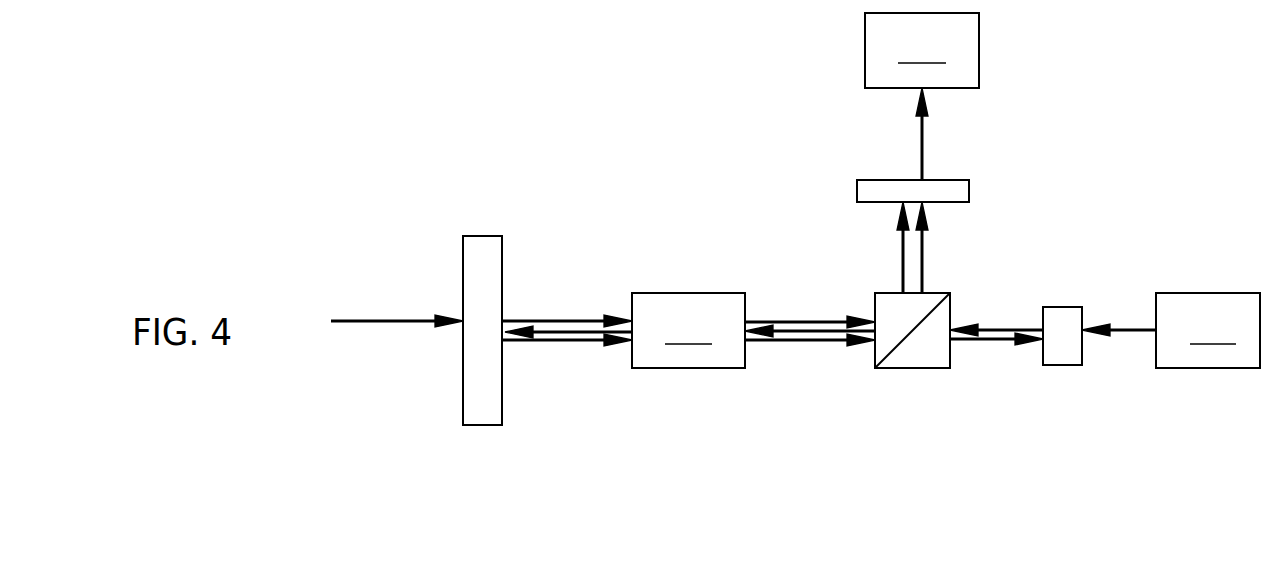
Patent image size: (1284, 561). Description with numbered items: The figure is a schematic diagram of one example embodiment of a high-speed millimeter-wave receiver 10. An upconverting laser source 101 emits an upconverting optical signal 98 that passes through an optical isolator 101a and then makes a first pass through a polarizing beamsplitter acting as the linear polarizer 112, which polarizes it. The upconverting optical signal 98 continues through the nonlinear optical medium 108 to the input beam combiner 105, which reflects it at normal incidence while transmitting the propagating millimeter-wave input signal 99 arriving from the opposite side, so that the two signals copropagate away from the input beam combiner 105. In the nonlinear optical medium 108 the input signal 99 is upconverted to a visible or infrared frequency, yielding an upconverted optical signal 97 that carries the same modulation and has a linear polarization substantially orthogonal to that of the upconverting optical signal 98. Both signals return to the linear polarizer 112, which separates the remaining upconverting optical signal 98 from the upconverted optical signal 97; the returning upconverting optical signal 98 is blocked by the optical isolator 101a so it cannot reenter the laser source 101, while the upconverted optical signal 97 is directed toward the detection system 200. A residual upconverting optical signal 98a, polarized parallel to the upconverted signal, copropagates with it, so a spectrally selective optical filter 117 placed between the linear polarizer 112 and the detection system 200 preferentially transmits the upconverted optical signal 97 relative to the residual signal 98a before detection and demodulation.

The receiver 10 is at (635, 138).
The input signal 99 is at (380, 318).
The input beam combiner 105 is at (477, 388).
The upconverting optical signal 98 is at (583, 335).
The nonlinear optical medium 108 is at (688, 330).
The upconverted optical signal 97 is at (802, 318).
The residual upconverting optical signal 98a is at (900, 265).
The linear polarizer 112 is at (912, 358).
The spectrally selective optical filter 117 is at (960, 193).
The detection system 200 is at (922, 50).
The upconverting laser source 101 is at (1208, 330).
The optical isolator 101a is at (1067, 355).